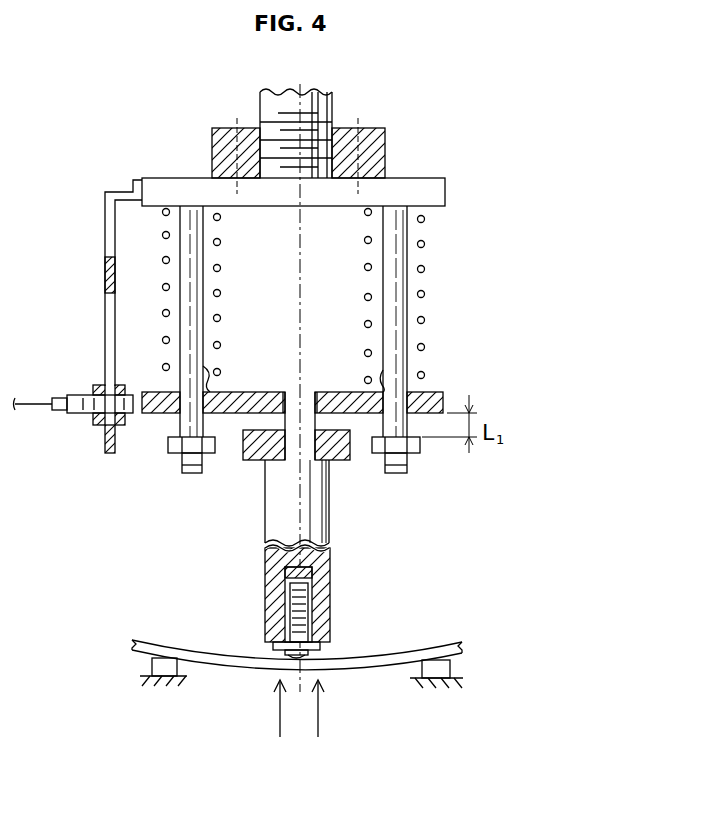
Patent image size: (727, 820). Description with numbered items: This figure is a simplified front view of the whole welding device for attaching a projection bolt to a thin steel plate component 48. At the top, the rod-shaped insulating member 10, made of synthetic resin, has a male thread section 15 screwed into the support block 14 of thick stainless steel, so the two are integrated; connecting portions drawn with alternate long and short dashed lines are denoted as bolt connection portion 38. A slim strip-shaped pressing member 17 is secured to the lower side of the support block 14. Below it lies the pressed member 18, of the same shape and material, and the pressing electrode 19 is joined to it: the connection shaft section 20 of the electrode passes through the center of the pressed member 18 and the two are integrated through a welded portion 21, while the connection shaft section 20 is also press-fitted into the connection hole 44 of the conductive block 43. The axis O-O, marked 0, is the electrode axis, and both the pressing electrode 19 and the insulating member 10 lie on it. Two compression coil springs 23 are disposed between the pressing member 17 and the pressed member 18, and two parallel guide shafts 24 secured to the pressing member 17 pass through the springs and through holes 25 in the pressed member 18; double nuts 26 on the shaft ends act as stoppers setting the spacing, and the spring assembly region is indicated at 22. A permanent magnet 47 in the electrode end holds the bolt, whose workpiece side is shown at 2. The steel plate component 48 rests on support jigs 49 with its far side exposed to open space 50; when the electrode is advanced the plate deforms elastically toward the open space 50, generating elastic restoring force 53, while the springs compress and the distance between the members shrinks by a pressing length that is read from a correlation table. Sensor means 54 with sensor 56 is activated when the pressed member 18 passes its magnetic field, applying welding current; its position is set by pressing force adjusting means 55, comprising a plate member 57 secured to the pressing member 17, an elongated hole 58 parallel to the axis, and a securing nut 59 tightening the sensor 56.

The electrode axis 0 is at (299, 390).
The workpiece 2 is at (287, 603).
The insulating member 10 is at (260, 106).
The support block 14 is at (385, 140).
The male thread section 15 is at (267, 148).
The pressing member 17 is at (432, 177).
The pressed member 18 is at (436, 392).
The pressing electrode 19 is at (256, 560).
The connection shaft section 20 is at (278, 391).
The welded portion 21 is at (314, 392).
The spring unit 22 is at (440, 321).
The compression coil springs 23 is at (221, 241).
The guide shafts 24 is at (204, 283).
The holes 25 is at (204, 366).
The double nuts 26 is at (168, 462).
The bolt connection portion 38 is at (360, 124).
The conductive block 43 is at (353, 460).
The connection hole 44 is at (288, 460).
The permanent magnet 47 is at (313, 575).
The steel plate component 48 is at (165, 640).
The support jigs 49 is at (150, 665).
The open space 50 is at (370, 704).
The elastic restoring force 53 is at (275, 732).
The sensor means 54 is at (82, 418).
The pressing force adjusting means 55 is at (96, 371).
The sensor 56 is at (78, 412).
The plate member 57 is at (105, 235).
The elongated hole 58 is at (108, 318).
The securing nut 59 is at (120, 426).